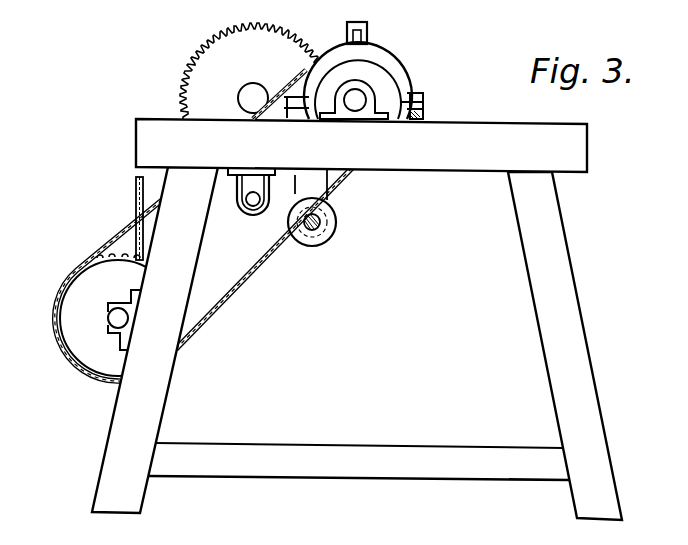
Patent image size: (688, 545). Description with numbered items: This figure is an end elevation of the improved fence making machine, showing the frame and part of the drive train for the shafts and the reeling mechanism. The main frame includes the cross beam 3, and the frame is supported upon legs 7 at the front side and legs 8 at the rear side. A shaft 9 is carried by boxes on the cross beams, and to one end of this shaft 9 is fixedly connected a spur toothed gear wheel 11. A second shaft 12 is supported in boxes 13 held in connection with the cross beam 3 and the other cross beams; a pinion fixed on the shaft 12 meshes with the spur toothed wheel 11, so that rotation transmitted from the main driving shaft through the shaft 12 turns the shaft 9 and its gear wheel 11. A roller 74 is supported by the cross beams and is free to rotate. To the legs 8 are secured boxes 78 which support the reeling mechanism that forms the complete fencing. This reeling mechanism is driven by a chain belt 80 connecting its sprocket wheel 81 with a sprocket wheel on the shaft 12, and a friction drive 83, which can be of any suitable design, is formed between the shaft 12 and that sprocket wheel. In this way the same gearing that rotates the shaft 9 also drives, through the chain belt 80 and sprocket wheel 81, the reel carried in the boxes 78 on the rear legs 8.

The cross beam 3 is at (361, 145).
The legs 7 is at (565, 346).
The legs 8 is at (155, 340).
The shaft 9 is at (253, 98).
The spur toothed gear wheel 11 is at (184, 95).
The shaft 12 is at (355, 98).
The boxes 13 is at (348, 70).
The roller 74 is at (251, 201).
The boxes 78 is at (113, 320).
The chain belt 80 is at (125, 218).
The sprocket wheel 81 is at (76, 305).
The friction drive 83 is at (426, 104).